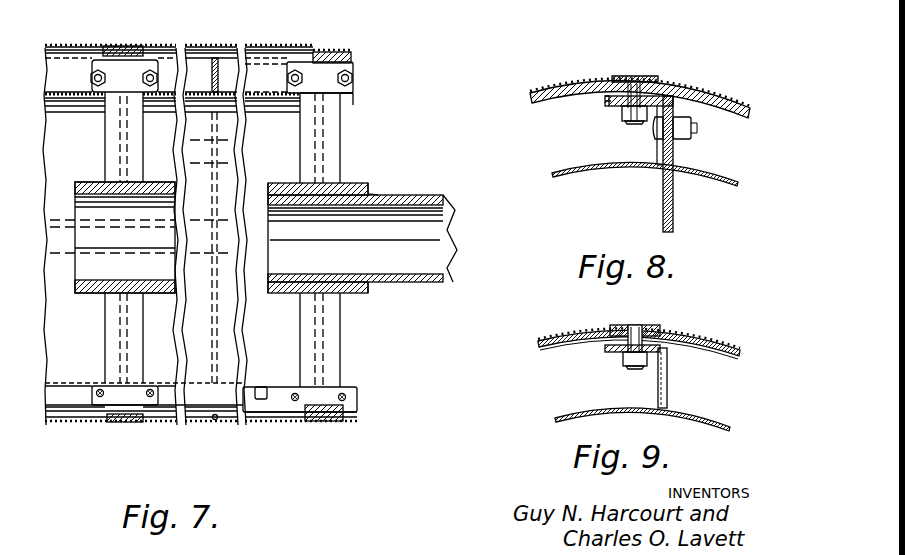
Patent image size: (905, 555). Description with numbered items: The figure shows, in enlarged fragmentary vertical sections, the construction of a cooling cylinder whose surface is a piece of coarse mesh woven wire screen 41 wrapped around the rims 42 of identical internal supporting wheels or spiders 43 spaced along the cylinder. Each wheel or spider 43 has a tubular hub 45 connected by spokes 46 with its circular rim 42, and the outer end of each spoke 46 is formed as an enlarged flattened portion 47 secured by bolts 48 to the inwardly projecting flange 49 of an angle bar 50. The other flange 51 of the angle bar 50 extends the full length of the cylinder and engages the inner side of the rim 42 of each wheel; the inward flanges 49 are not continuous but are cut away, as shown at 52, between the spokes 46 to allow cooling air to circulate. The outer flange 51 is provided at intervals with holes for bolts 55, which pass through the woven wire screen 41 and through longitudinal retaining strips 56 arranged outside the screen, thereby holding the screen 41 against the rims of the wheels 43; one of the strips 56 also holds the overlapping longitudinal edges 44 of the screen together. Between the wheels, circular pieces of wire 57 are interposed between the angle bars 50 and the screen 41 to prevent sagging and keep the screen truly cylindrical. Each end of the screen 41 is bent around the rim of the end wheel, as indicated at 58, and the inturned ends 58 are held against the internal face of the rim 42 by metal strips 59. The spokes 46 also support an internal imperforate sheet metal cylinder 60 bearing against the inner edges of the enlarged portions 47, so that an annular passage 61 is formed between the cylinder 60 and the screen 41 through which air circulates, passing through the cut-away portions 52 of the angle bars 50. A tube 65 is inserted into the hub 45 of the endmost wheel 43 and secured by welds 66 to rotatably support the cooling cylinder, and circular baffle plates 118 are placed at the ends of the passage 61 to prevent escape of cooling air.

In FIG. 7, the coarse mesh woven wire screen 41 is at (270, 41).
In FIG. 8, the coarse mesh woven wire screen 41 is at (740, 99).
In FIG. 7, the rim 42 is at (110, 61).
In FIG. 8, the rim 42 is at (554, 104).
In FIG. 7, the internal supporting wheel or spider 43 is at (78, 155).
In FIG. 8, the internal supporting wheel or spider 43 is at (688, 192).
In FIG. 9, the overlapped edges 44 is at (607, 337).
In FIG. 7, the tubular hub 45 is at (76, 186).
In FIG. 7, the spoke 46 is at (302, 138).
In FIG. 8, the spoke 46 is at (663, 219).
In FIG. 7, the enlarged flattened portion 47 is at (354, 71).
In FIG. 8, the bolt 48 is at (697, 137).
In FIG. 7, the inwardly projecting flange 49 is at (354, 82).
In FIG. 8, the inwardly projecting flange 49 is at (657, 140).
In FIG. 9, the inwardly projecting flange 49 is at (667, 398).
In FIG. 8, the angle bar 50 is at (612, 132).
In FIG. 9, the angle bar 50 is at (595, 376).
In FIG. 7, the outer flange 51 is at (83, 401).
In FIG. 8, the outer flange 51 is at (608, 105).
In FIG. 9, the outer flange 51 is at (605, 350).
In FIG. 7, the cut-away portion 52 is at (283, 399).
In FIG. 9, the cut-away portion 52 is at (668, 372).
In FIG. 8, the bolt 55 is at (642, 76).
In FIG. 8, the longitudinal retaining strip 56 is at (625, 60).
In FIG. 9, the circular piece of wire 57 is at (542, 358).
In FIG. 7, the inturned end 58 is at (348, 54).
In FIG. 7, the metal strip 59 is at (320, 79).
In FIG. 7, the internal imperforate sheet metal cylinder 60 is at (276, 94).
In FIG. 8, the internal imperforate sheet metal cylinder 60 is at (556, 175).
In FIG. 9, the internal imperforate sheet metal cylinder 60 is at (568, 421).
In FIG. 7, the annular passage 61 is at (195, 61).
In FIG. 8, the annular passage 61 is at (552, 157).
In FIG. 9, the annular passage 61 is at (556, 408).
In FIG. 7, the tube 65 is at (362, 230).
In FIG. 7, the weld 66 is at (442, 194).
In FIG. 7, the circular baffle plate 118 is at (310, 101).